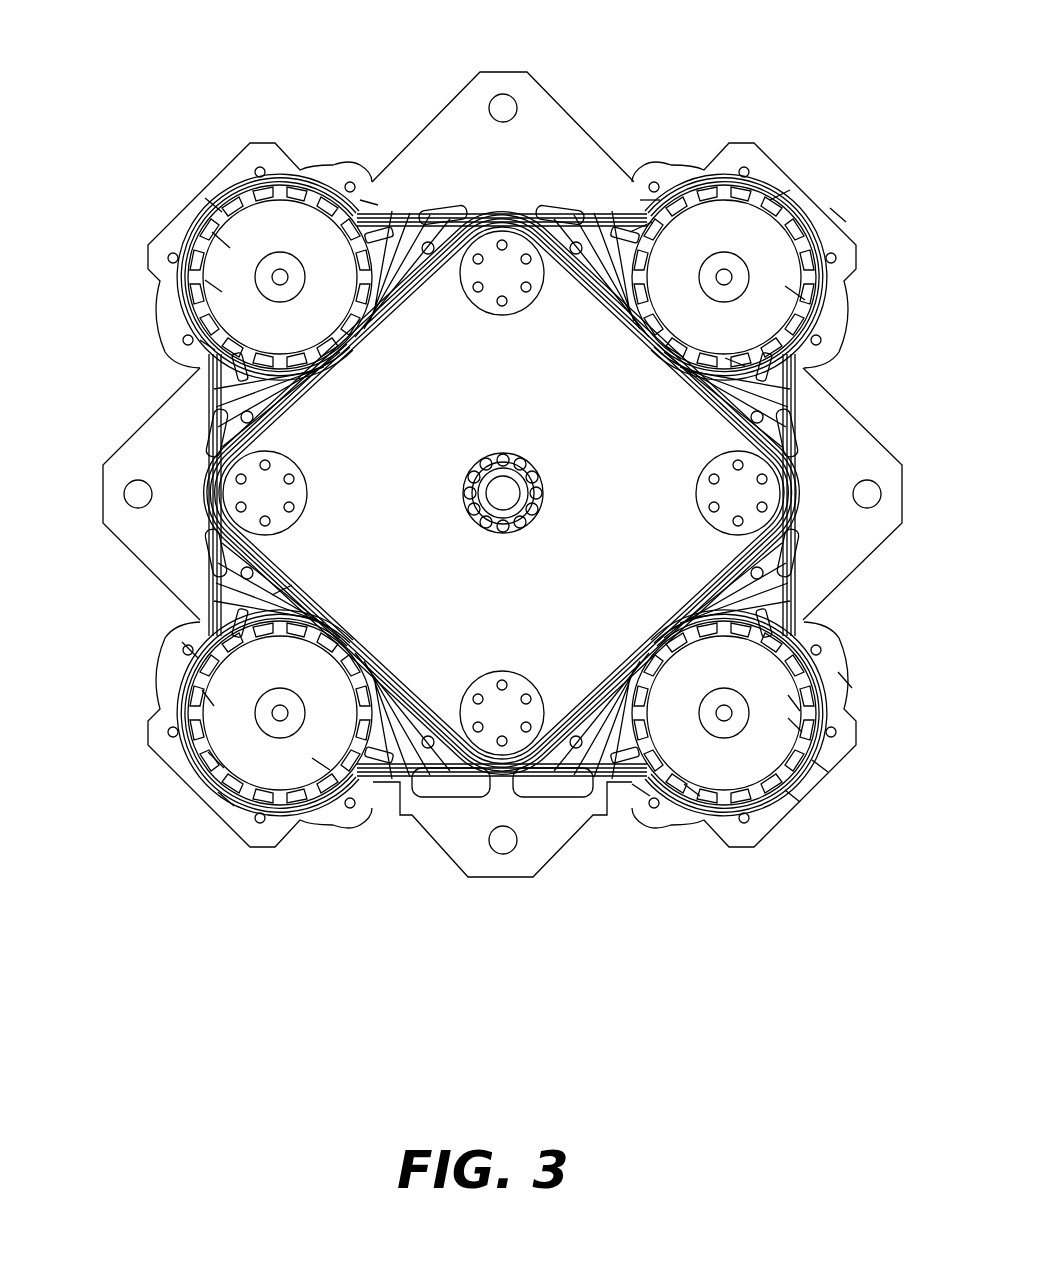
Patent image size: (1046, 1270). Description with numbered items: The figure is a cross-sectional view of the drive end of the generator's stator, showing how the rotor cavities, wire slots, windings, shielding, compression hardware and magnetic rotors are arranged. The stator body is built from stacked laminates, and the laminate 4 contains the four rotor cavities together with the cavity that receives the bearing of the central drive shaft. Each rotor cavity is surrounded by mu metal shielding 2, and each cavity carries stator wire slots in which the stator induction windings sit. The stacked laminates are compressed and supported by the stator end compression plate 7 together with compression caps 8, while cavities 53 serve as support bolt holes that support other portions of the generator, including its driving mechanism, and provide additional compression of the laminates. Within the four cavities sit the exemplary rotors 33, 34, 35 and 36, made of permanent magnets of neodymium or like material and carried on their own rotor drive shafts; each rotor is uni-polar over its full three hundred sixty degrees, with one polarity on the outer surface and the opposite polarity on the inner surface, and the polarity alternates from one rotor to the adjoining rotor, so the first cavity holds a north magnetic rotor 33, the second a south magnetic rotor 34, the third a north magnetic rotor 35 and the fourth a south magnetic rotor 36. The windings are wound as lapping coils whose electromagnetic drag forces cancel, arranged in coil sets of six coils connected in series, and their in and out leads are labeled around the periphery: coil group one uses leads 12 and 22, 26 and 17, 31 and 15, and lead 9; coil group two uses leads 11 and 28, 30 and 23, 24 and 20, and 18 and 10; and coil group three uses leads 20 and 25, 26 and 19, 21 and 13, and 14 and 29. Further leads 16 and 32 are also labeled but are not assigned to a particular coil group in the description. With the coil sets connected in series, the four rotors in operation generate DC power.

The mu metal shielding 2 is at (725, 358).
The laminate 4 is at (472, 95).
The stator end compression plate 7 is at (725, 557).
The compression caps 8 is at (500, 305).
The coil lead 9 is at (380, 220).
The coil lead 10 is at (370, 198).
The coil lead 11 is at (215, 198).
The coil lead 12 is at (640, 228).
The coil lead 13 is at (218, 238).
The coil lead 14 is at (205, 345).
The coil lead 15 is at (272, 375).
The belt section 16 is at (282, 590).
The coil lead 17 is at (190, 650).
The coil lead 18 is at (215, 760).
The coil lead 19 is at (225, 800).
The coil lead 20 is at (320, 765).
The coil lead 21 is at (352, 790).
The coil lead 22 is at (640, 790).
The coil lead 23 is at (692, 790).
The coil lead 24 is at (793, 797).
The coil lead 25 is at (820, 767).
The coil lead 26 is at (793, 703).
The coil lead 28 is at (735, 362).
The coil lead 29 is at (838, 202).
The coil lead 30 is at (778, 202).
The coil lead 31 is at (650, 196).
The belt guide 32 is at (845, 680).
The north magnetic rotor 33 is at (213, 283).
The south magnetic rotor 34 is at (795, 293).
The north magnetic rotor 35 is at (795, 725).
The south magnetic rotor 36 is at (208, 698).
The cavities 53 is at (503, 96).